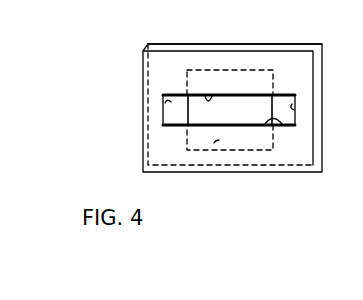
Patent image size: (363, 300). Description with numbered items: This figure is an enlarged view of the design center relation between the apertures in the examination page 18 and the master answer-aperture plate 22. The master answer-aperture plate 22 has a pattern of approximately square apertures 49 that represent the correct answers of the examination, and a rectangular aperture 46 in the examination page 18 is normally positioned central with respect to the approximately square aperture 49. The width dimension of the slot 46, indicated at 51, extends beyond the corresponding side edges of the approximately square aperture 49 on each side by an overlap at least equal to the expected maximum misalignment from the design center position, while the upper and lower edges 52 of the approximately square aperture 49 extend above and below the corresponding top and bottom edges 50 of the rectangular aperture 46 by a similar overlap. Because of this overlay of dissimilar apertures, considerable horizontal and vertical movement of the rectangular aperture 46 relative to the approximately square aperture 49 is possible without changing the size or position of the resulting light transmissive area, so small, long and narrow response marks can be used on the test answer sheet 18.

The examination page 18 is at (142, 65).
The master answer-aperture plate 22 is at (180, 25).
The rectangular aperture 46 is at (168, 111).
The approximately square aperture 49 is at (214, 143).
The top and bottom edges of the rectangular aperture 50 is at (209, 96).
The width dimension of the slot 51 is at (165, 103).
The upper and lower edges of the square aperture 52 is at (243, 70).